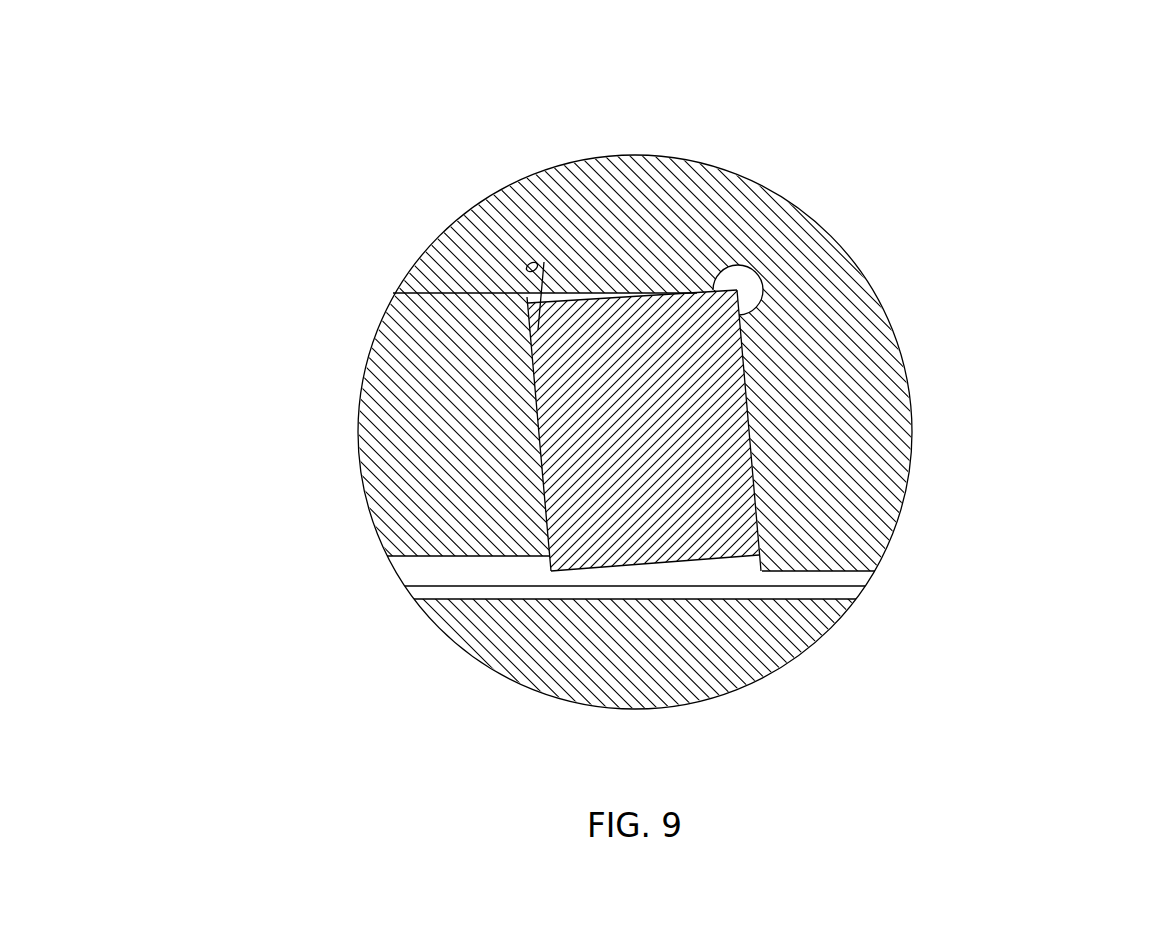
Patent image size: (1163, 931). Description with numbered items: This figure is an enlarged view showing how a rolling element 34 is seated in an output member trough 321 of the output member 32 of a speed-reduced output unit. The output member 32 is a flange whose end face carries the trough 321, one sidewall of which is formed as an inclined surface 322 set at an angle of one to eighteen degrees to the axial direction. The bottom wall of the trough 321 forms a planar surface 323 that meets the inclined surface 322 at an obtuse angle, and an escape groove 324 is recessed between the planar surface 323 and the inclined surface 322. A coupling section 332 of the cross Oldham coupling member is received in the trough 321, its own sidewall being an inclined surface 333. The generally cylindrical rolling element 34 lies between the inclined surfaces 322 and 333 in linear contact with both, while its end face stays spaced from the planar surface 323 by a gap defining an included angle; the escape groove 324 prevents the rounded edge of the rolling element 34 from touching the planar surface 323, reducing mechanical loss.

The output member 32 is at (833, 433).
The rolling element 34 is at (673, 350).
The output member trough 321 is at (473, 290).
The inclined surface 322 is at (750, 408).
The planar surface 323 is at (600, 292).
The escape groove 324 is at (753, 268).
The coupling section 332 is at (452, 457).
The inclined surface 333 is at (535, 408).